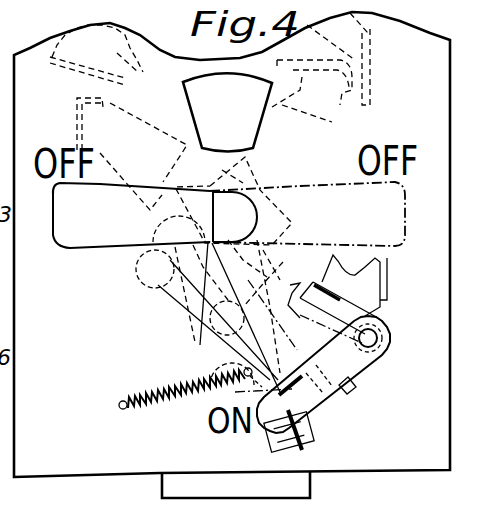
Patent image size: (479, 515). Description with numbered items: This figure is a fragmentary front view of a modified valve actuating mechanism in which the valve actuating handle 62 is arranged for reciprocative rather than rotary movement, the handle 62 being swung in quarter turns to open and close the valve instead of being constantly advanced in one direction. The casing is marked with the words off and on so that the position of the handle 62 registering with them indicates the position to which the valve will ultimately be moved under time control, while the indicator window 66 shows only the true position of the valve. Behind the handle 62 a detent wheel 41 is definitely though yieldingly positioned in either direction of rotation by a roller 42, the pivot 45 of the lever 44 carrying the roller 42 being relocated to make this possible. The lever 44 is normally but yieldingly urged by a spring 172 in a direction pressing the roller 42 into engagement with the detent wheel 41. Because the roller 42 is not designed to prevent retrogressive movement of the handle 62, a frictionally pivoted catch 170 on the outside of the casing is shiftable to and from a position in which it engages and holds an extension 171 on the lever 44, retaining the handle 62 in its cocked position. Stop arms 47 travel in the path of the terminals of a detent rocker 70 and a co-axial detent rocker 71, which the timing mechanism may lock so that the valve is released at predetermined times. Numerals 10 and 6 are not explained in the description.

The housing 10 is at (232, 256).
The base 6 is at (14, 501).
The detent wheel 41 is at (235, 201).
The roller 42 is at (141, 252).
The lever 44 is at (240, 316).
The pivot 45 is at (259, 317).
The stop arms 47 is at (76, 100).
The valve actuating handle 62 is at (197, 374).
The indicator window 66 is at (255, 125).
The detent rocker 70 is at (110, 59).
The co-axial detent rocker 71 is at (375, 66).
The frictionally pivoted catch 170 is at (360, 368).
The extension 171 is at (272, 448).
The spring 172 is at (180, 406).